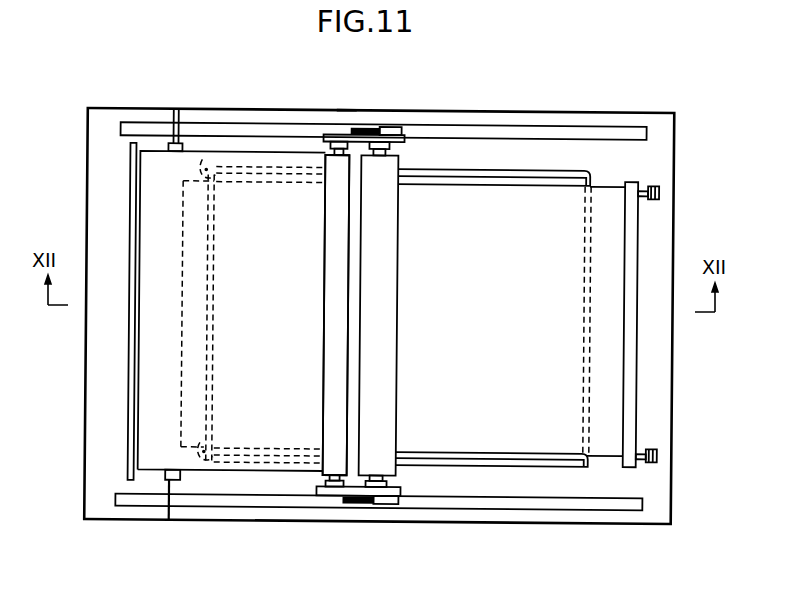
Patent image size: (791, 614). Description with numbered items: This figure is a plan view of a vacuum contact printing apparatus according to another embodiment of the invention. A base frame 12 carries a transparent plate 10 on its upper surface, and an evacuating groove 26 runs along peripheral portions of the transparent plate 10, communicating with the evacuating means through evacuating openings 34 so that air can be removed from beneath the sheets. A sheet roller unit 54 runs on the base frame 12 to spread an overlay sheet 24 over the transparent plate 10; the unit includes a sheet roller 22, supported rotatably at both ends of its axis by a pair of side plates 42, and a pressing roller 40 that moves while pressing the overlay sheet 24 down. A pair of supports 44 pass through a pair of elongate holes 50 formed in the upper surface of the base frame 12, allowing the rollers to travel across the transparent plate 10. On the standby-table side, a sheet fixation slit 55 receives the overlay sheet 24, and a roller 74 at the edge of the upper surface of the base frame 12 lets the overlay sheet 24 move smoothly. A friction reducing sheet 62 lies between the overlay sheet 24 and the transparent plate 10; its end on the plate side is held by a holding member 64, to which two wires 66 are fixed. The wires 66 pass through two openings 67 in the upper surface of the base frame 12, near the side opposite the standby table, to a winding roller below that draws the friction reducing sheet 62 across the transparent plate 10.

The transparent plate 10 is at (525, 174).
The base frame 12 is at (654, 256).
The sheet roller 22 is at (397, 322).
The overlay sheet 24 is at (259, 154).
The evacuating groove 26 is at (524, 464).
The evacuating openings 34 is at (201, 162).
The pressing roller 40 is at (323, 326).
The side plates 42 is at (393, 127).
The supports 44 is at (363, 128).
The elongate holes 50 is at (614, 125).
The sheet roller unit 54 is at (343, 118).
The sheet fixation slit 55 is at (129, 217).
The friction reducing sheet 62 is at (457, 191).
The holding member 64 is at (637, 370).
The wires 66 is at (638, 181).
The openings 67 is at (649, 181).
The roller 74 is at (178, 110).